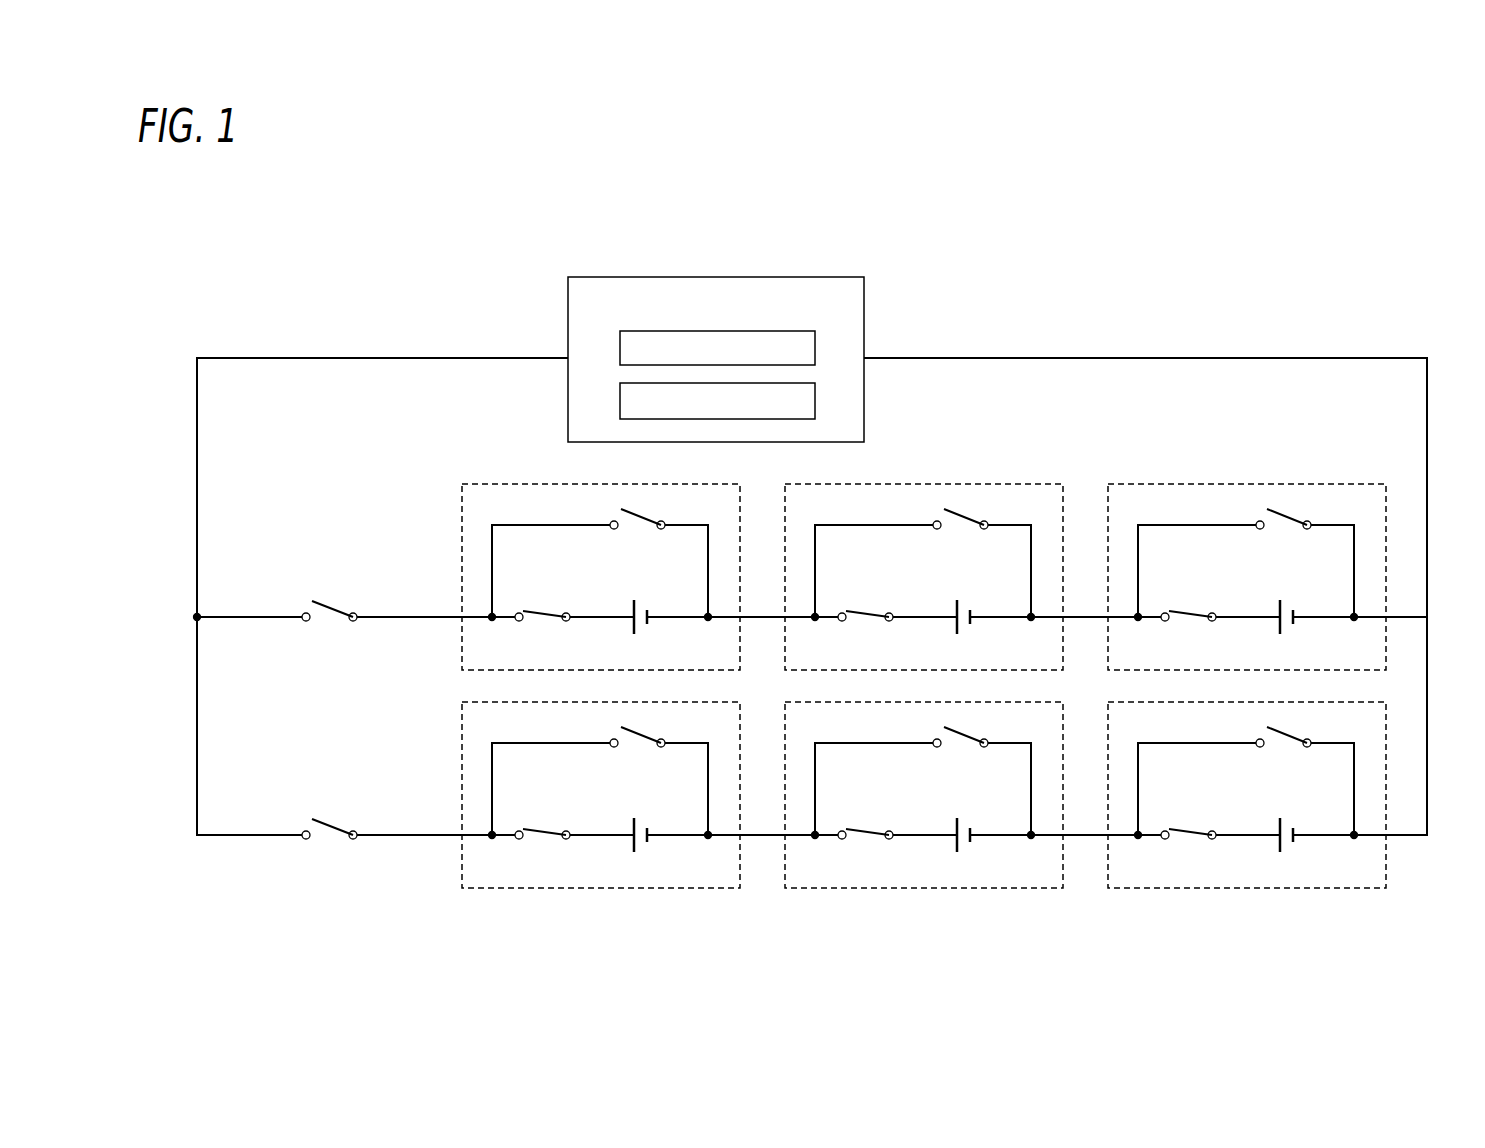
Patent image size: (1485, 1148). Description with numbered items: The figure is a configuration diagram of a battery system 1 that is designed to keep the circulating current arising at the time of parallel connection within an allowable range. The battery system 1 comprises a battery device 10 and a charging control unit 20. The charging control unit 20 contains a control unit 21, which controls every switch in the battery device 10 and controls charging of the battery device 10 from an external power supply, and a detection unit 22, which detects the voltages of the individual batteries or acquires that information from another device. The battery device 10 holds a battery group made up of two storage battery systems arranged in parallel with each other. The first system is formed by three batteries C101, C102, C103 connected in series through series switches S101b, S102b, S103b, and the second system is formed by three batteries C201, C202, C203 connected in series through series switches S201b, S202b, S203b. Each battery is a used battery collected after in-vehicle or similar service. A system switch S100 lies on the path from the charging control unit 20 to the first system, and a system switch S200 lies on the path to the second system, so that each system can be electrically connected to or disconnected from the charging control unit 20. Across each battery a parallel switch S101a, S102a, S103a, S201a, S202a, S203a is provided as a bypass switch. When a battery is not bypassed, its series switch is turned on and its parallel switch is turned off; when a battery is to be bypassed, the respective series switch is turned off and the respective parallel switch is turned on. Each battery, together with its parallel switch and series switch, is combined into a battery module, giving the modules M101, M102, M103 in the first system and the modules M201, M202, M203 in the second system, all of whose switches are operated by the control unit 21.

The battery system 1 is at (1249, 299).
The battery device 10 is at (1307, 468).
The charging control unit 20 is at (771, 338).
The control unit 21 is at (815, 353).
The detection unit 22 is at (815, 401).
The system switch S100 is at (354, 601).
The system switch S200 is at (354, 819).
The battery module M101 is at (601, 563).
The battery module M102 is at (924, 563).
The battery module M103 is at (1247, 563).
The battery module M201 is at (601, 781).
The battery module M202 is at (924, 781).
The battery module M203 is at (1247, 781).
The parallel switch S101a is at (666, 509).
The series switch S101b is at (546, 595).
The parallel switch S102a is at (989, 509).
The series switch S102b is at (869, 595).
The parallel switch S103a is at (1312, 509).
The series switch S103b is at (1192, 595).
The parallel switch S201a is at (666, 727).
The series switch S201b is at (546, 813).
The parallel switch S202a is at (989, 727).
The series switch S202b is at (869, 813).
The parallel switch S203a is at (1312, 727).
The series switch S203b is at (1192, 813).
The battery C101 is at (647, 634).
The battery C102 is at (970, 634).
The battery C103 is at (1293, 634).
The battery C201 is at (647, 852).
The battery C202 is at (970, 852).
The battery C203 is at (1293, 852).